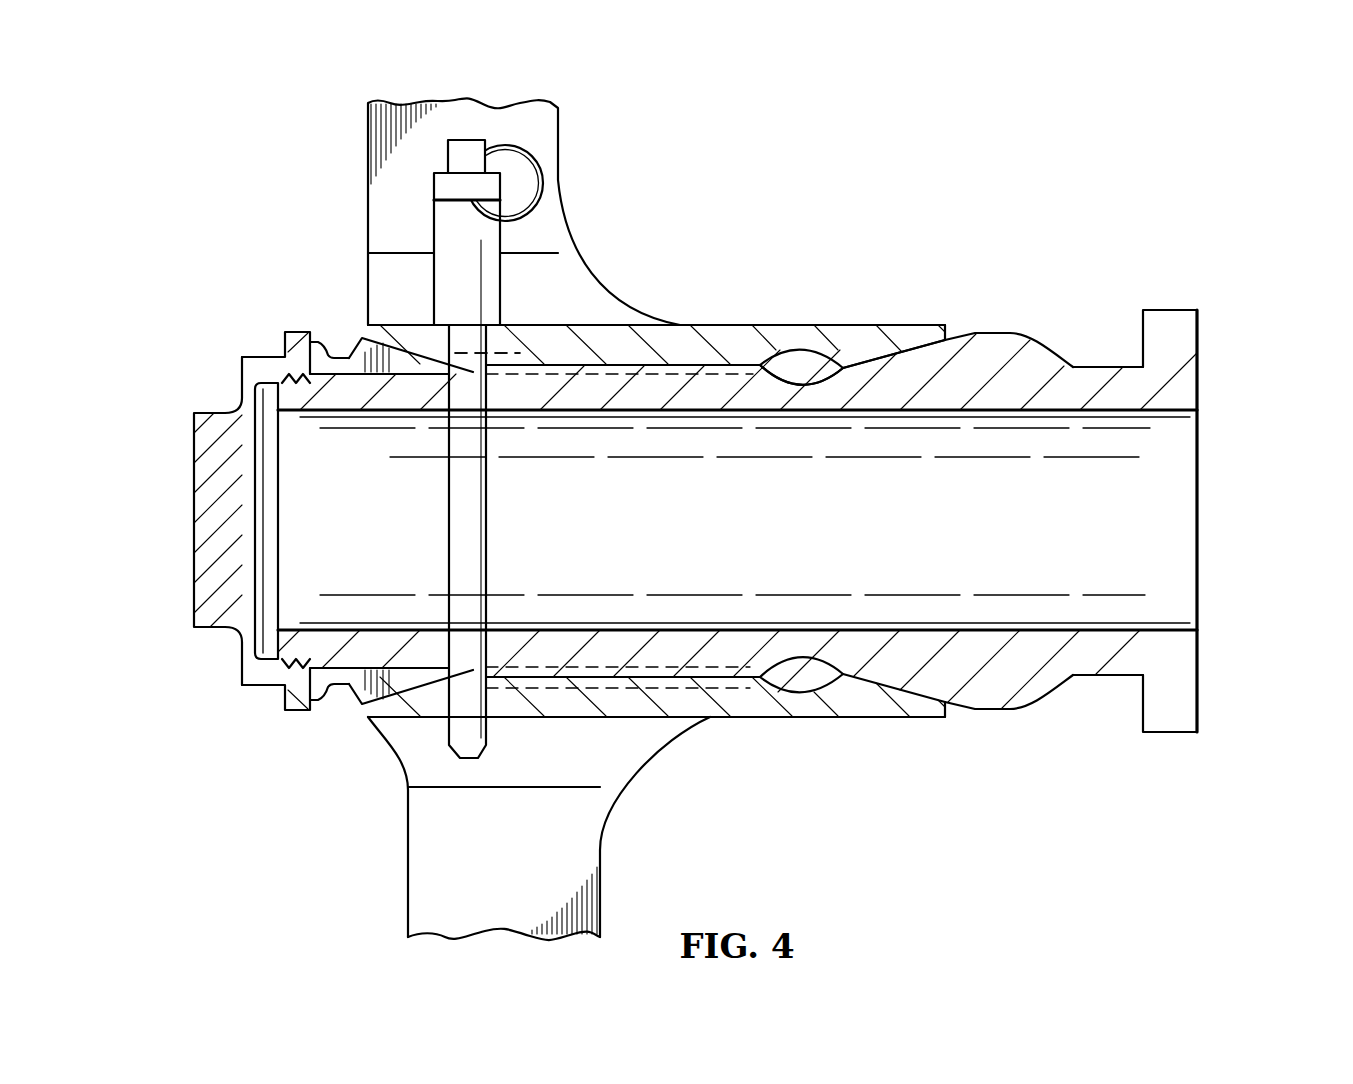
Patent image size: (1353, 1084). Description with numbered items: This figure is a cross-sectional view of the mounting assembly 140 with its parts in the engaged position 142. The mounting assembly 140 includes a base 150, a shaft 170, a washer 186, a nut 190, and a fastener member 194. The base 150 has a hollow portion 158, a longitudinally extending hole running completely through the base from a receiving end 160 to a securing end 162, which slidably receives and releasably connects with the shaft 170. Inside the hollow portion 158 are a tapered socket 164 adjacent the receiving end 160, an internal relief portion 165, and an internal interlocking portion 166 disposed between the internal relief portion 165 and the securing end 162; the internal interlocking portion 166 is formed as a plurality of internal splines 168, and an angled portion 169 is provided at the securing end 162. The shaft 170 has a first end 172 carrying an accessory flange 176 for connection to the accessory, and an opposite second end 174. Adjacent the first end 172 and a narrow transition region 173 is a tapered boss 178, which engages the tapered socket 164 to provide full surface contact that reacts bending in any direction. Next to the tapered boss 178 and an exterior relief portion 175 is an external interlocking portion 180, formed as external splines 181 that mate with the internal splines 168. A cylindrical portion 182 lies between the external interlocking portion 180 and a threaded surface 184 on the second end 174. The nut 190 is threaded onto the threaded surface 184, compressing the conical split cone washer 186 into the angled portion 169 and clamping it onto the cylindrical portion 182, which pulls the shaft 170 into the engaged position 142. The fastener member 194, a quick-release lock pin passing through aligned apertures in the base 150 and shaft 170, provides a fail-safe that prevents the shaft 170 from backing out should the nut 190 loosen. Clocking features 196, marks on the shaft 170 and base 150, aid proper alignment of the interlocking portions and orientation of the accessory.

The mounting assembly 140 is at (1081, 112).
The engaged position 142 is at (954, 164).
The base 150 is at (367, 206).
The hollow portion 158 is at (875, 352).
The receiving end 160 is at (948, 334).
The securing end 162 is at (363, 326).
The tapered socket 164 is at (912, 350).
The internal relief portion 165 is at (800, 350).
The internal interlocking portion 166 is at (744, 363).
The internal splines 168 is at (688, 377).
The angled portion 169 is at (396, 346).
The shaft 170 is at (1197, 662).
The first end 172 is at (1200, 360).
The narrow transition region 173 is at (1073, 366).
The second end 174 is at (276, 512).
The exterior relief portion 175 is at (810, 388).
The accessory flange 176 is at (1171, 310).
The tapered boss 178 is at (942, 368).
The external interlocking portion 180 is at (548, 377).
The external splines 181 is at (627, 370).
The cylindrical portion 182 is at (323, 377).
The threaded surface 184 is at (282, 403).
The washer 186 is at (332, 356).
The nut 190 is at (200, 553).
The fastener member 194 is at (467, 140).
The clocking features 196 is at (465, 352).